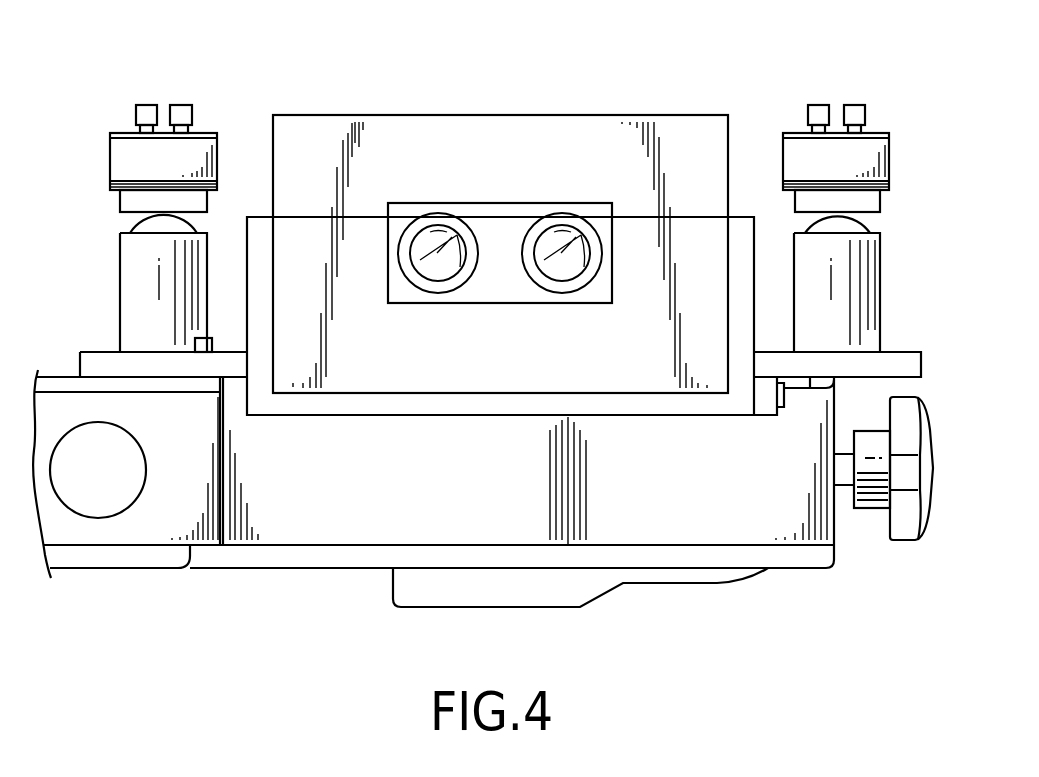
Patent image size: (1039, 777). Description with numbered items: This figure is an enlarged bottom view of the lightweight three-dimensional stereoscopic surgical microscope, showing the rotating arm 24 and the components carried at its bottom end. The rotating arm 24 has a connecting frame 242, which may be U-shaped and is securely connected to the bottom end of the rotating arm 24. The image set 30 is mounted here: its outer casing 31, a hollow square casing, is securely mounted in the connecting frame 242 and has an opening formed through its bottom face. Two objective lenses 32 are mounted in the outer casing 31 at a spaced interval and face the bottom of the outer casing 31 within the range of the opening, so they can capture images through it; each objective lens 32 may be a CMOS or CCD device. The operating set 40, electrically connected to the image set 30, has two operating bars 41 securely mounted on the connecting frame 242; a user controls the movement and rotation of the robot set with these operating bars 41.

The rotating arm 24 is at (323, 516).
The connecting frame 242 is at (398, 402).
The image set 30 is at (500, 203).
The outer casing 31 is at (393, 128).
The objective lens 32 is at (560, 235).
The operating set 40 is at (526, 228).
The operating bar 41 is at (117, 160).